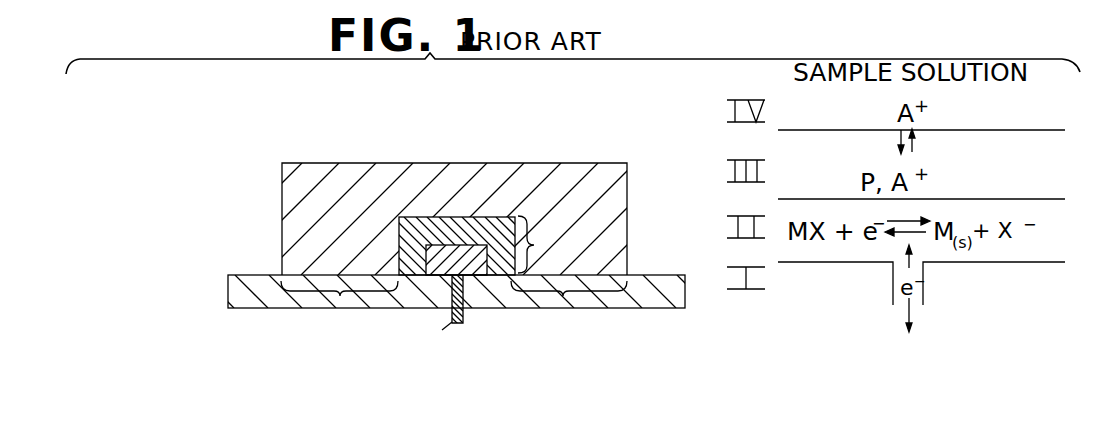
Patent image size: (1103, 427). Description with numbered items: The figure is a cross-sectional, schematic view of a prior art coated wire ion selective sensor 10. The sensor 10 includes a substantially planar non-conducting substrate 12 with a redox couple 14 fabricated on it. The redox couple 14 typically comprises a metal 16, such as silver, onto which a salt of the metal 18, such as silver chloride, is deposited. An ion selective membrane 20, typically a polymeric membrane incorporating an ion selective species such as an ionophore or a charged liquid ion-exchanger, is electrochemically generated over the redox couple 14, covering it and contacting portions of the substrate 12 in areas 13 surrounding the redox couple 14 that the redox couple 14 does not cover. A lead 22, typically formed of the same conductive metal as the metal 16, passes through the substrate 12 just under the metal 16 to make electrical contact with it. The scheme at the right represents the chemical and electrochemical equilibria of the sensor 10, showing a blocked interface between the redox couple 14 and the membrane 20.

The coated wire ion selective sensor 10 is at (185, 116).
The non-conducting substrate 12 is at (653, 297).
The areas surrounding redox couple 13 is at (340, 296).
The redox couple 14 is at (535, 245).
The metal 16 is at (438, 276).
The salt of the metal 18 is at (422, 221).
The ion selective membrane 20 is at (291, 197).
The lead 22 is at (465, 312).